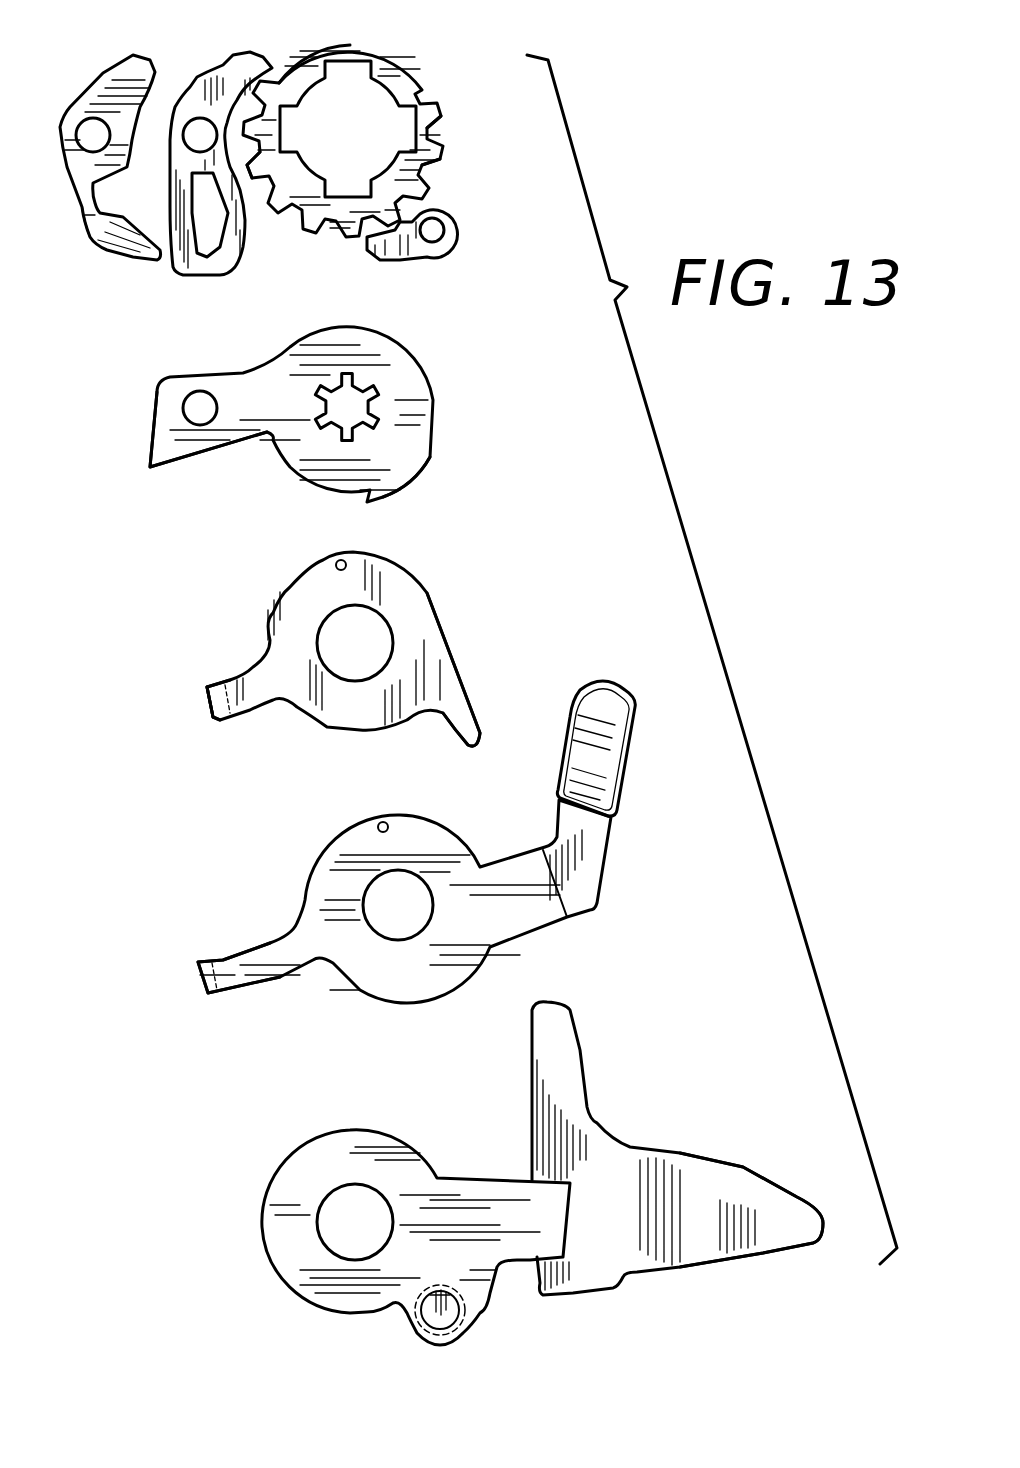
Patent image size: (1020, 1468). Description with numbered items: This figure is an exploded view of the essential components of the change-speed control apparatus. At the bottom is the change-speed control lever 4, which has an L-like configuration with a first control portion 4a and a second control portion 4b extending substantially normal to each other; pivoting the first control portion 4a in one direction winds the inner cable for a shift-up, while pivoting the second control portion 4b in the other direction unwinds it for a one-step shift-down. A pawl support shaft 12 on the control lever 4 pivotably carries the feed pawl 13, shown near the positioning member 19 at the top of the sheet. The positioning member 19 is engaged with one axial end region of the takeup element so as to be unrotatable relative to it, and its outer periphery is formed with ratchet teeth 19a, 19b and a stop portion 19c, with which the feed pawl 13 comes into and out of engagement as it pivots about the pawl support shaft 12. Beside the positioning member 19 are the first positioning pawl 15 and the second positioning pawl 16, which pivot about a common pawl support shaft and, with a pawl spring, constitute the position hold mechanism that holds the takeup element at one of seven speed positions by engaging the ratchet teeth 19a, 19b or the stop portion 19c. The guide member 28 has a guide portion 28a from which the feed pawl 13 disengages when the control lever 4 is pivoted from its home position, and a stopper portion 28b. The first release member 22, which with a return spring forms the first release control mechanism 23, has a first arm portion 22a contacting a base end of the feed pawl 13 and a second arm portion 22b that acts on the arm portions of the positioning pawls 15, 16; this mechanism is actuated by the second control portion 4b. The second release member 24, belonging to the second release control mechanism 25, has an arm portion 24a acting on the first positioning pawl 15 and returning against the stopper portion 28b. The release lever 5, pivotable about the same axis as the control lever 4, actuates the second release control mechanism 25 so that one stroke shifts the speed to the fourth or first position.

The second positioning pawl 16 is at (117, 73).
The first positioning pawl 15 is at (227, 65).
The positioning member 19 is at (407, 67).
The ratchet tooth 19a is at (453, 163).
The ratchet tooth 19b is at (263, 217).
The stop portion 19c is at (277, 53).
The feed pawl 13 is at (433, 260).
The first release control mechanism 23 is at (83, 220).
The guide member 28 is at (297, 460).
The guide portion 28a is at (420, 480).
The stopper portion 28b is at (160, 448).
The first release member 22 is at (433, 613).
The first arm portion 22a is at (483, 720).
The second arm portion 22b is at (210, 713).
The second release control mechanism 25 is at (193, 693).
The release lever 5 is at (627, 723).
The second release member 24 is at (320, 870).
The arm portion 24a is at (200, 962).
The change-speed control lever 4 is at (513, 1178).
The first control portion 4a is at (743, 1170).
The second control portion 4b is at (577, 1048).
The pawl support shaft 12 is at (447, 1317).